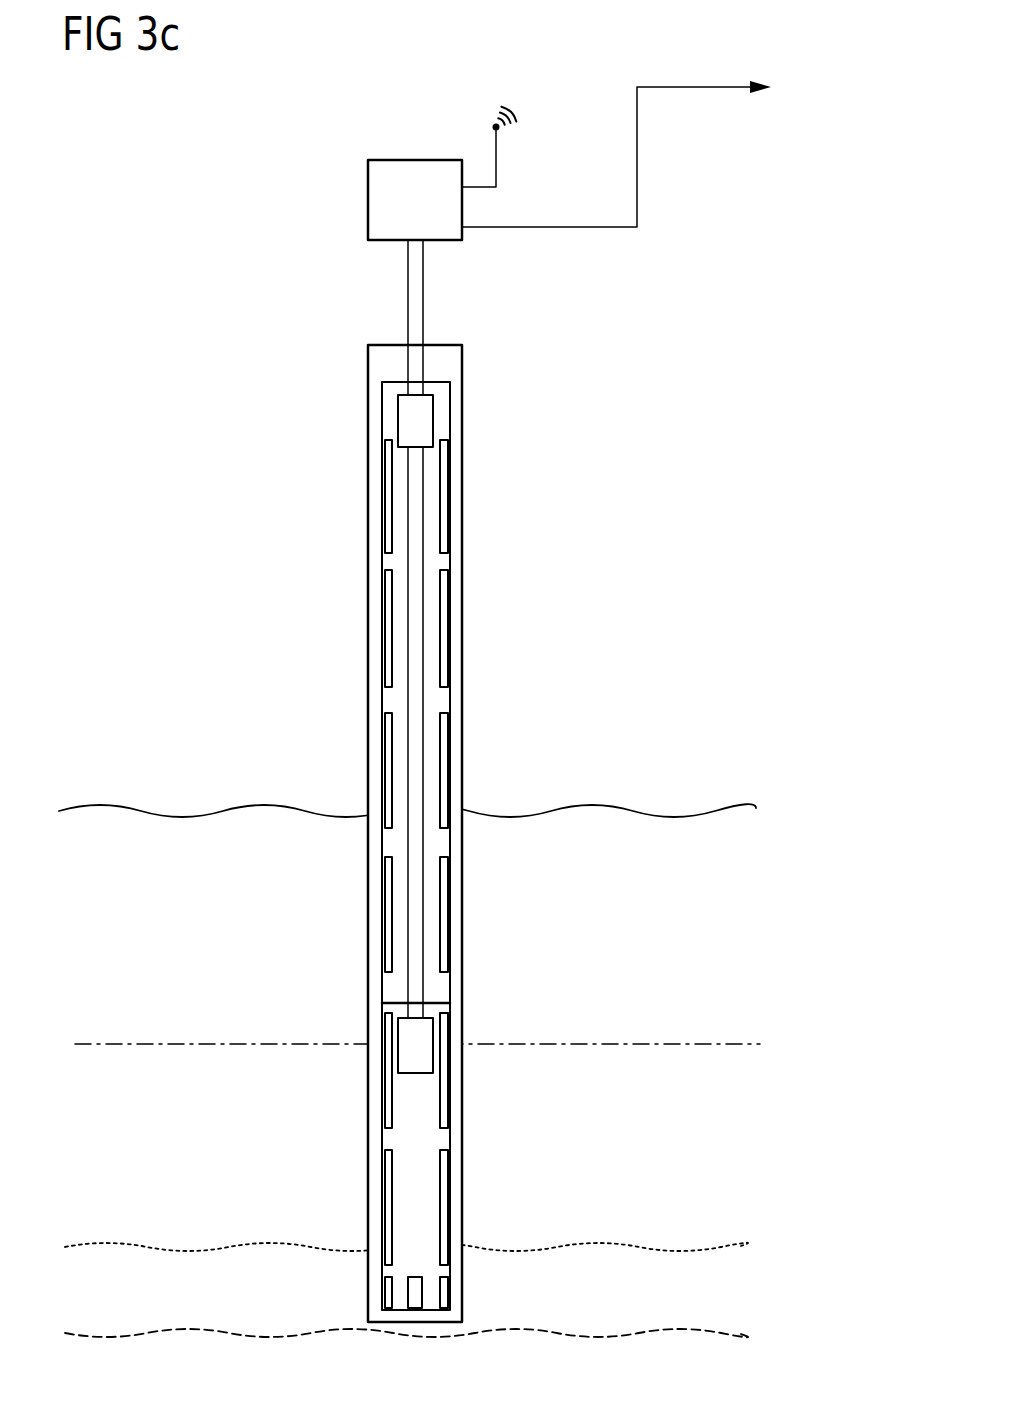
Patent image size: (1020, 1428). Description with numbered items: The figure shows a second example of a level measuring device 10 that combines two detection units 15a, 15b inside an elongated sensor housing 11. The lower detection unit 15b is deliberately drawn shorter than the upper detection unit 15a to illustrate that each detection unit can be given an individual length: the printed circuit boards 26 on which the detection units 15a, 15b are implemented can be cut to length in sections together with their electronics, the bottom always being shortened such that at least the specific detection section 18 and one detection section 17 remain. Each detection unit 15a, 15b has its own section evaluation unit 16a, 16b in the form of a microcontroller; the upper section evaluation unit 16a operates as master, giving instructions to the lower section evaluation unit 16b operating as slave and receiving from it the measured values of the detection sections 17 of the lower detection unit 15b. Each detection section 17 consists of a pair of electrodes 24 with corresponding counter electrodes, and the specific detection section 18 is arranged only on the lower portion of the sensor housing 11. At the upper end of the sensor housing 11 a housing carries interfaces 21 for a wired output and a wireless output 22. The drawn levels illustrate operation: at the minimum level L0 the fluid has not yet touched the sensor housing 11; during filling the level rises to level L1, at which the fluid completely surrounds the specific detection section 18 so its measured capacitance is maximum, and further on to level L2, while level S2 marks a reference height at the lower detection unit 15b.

The level measuring device 10 is at (316, 182).
The sensor housing 11 is at (368, 358).
The upper detection unit 15a is at (569, 383).
The lower detection unit 15b is at (569, 1000).
The upper section evaluation unit 16a is at (410, 418).
The lower section evaluation unit 16b is at (410, 1040).
The detection section 17 is at (483, 440).
The specific detection section 18 is at (483, 1277).
The interface for a wired output 21 is at (705, 89).
The wireless output 22 is at (497, 155).
The electrode 24 is at (443, 512).
The printed circuit board 26 is at (388, 700).
The minimum level L0 is at (420, 1336).
The filling level L1 is at (420, 1249).
The filling level L2 is at (417, 814).
The level S2 is at (443, 1047).